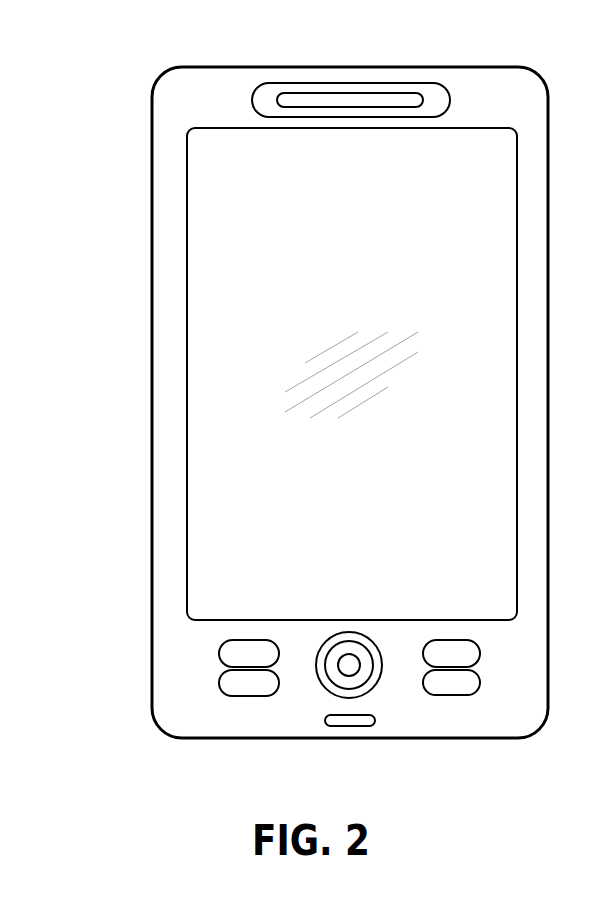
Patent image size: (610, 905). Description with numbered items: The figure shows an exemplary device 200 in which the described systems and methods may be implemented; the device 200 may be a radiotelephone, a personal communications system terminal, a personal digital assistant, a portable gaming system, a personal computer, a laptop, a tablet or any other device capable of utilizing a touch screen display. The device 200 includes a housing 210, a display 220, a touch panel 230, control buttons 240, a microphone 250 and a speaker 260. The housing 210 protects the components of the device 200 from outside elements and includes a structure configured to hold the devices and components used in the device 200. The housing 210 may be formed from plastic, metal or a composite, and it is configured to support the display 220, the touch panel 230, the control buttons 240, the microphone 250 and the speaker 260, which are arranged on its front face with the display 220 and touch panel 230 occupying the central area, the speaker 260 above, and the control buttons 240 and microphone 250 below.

The device 200 is at (162, 31).
The housing 210 is at (152, 197).
The display 220 is at (187, 363).
The touch panel 230 is at (208, 248).
The control buttons 240 is at (193, 683).
The microphone 250 is at (350, 726).
The speaker 260 is at (252, 100).